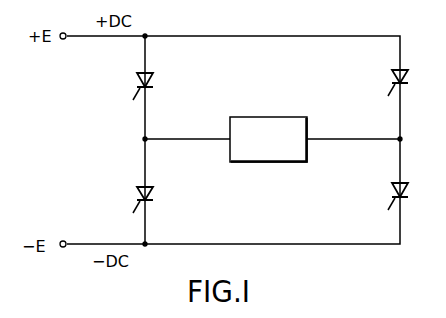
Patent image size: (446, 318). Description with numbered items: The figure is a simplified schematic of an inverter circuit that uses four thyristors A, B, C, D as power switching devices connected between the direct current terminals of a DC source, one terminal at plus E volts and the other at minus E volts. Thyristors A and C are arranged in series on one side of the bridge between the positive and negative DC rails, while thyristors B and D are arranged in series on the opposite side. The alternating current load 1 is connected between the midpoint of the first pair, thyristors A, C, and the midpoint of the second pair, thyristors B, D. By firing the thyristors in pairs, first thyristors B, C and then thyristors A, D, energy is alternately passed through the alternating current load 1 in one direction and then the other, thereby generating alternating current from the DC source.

The alternating current load 1 is at (288, 117).
The thyristor A is at (134, 86).
The thyristor B is at (406, 83).
The thyristor C is at (135, 200).
The thyristor D is at (407, 196).